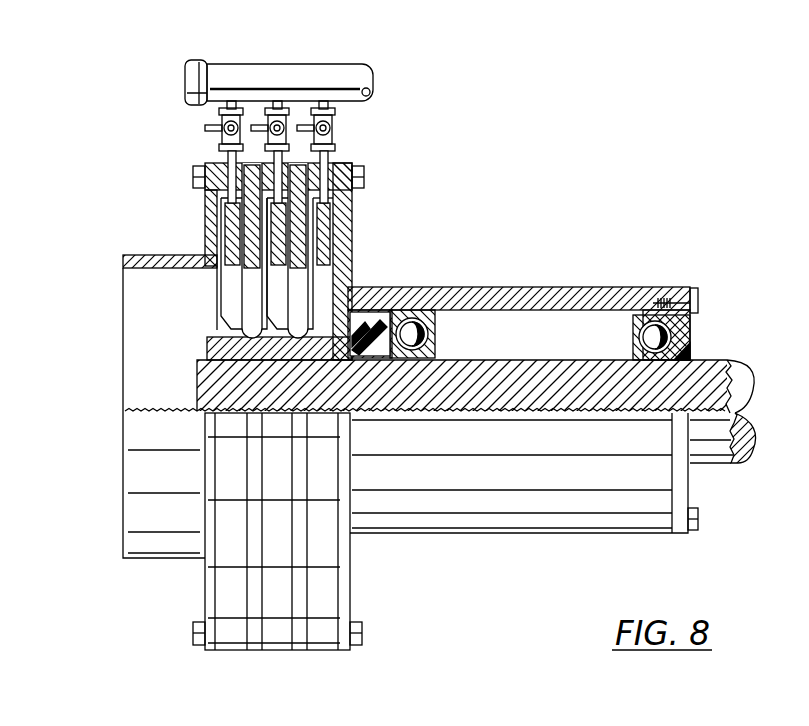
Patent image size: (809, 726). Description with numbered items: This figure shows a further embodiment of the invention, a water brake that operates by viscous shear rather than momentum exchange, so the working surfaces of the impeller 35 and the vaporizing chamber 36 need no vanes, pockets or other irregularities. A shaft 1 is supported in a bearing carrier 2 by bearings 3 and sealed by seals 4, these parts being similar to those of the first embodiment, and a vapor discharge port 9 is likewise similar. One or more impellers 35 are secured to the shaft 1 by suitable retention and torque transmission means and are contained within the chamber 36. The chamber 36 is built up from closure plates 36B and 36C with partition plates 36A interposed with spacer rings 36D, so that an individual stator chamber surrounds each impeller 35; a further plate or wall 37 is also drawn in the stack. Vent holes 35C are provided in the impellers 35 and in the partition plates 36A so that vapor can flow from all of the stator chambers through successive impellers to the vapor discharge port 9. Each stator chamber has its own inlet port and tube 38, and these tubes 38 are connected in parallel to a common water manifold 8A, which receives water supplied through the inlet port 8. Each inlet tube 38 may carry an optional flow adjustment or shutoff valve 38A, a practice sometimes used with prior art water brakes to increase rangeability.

The shaft 1 is at (752, 385).
The bearing carrier 2 is at (500, 533).
The bearings 3 is at (437, 322).
The seals 4 is at (378, 316).
The inlet port 8 is at (375, 87).
The common water manifold 8A is at (236, 64).
The vapor discharge port 9 is at (123, 327).
The impeller 35 is at (226, 233).
The vent holes 35C is at (223, 290).
The vaporizing chamber 36 is at (288, 651).
The partition plates 36A is at (343, 220).
The closure plate 36B is at (352, 201).
The closure plate 36C is at (203, 197).
The spacer rings 36D is at (232, 162).
The housing wall 37 is at (215, 212).
The inlet port and tube 38 is at (337, 153).
The flow adjustment or shutoff valve 38A is at (342, 128).